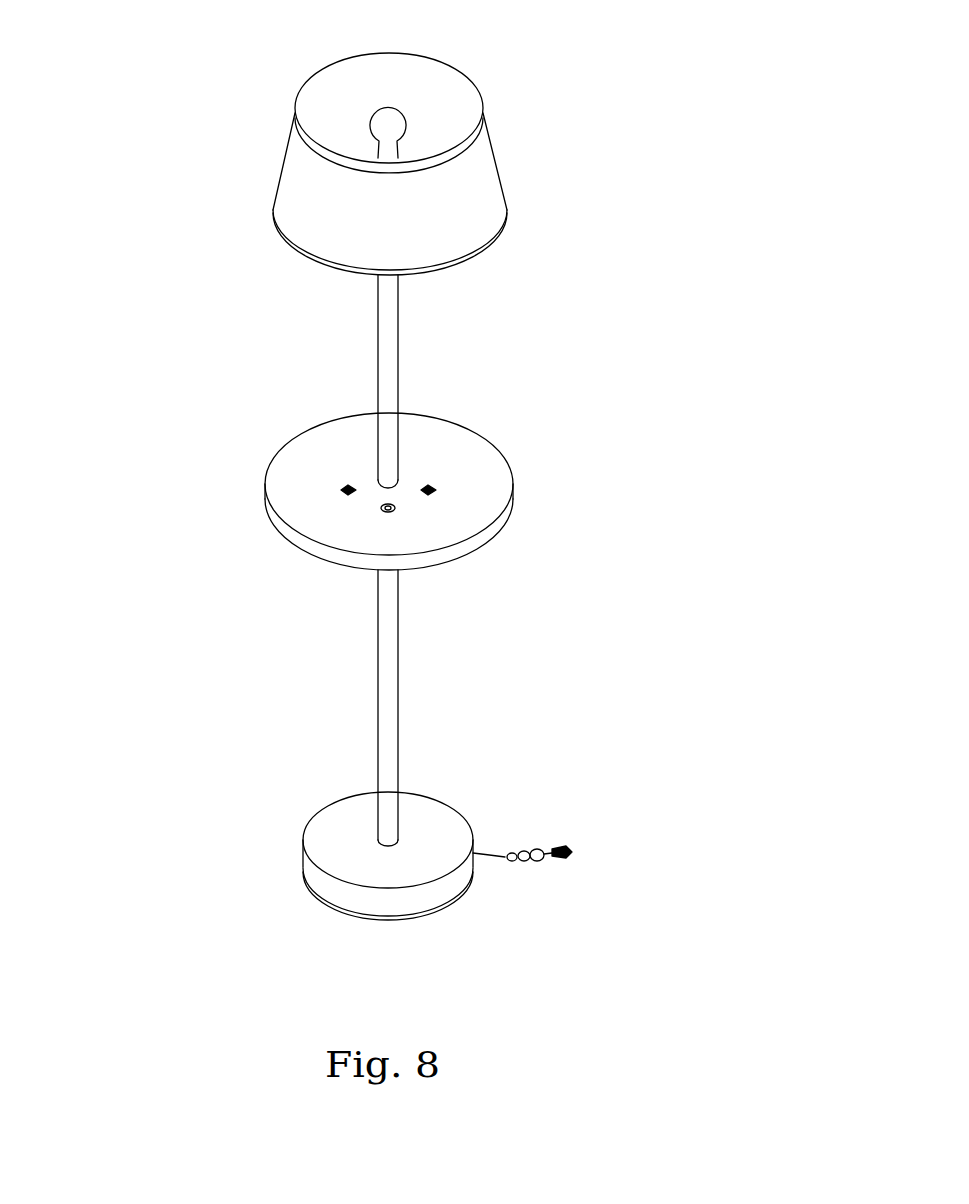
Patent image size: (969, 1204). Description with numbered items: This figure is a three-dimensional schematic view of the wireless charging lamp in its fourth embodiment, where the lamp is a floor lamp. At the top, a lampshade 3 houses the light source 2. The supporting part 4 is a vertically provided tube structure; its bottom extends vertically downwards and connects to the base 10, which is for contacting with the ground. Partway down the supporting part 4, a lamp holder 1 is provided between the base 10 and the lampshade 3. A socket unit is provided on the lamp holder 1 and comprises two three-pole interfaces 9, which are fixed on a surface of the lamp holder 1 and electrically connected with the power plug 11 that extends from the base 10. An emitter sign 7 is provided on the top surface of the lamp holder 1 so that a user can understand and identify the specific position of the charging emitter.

The lamp holder 1 is at (473, 507).
The light source 2 is at (398, 125).
The lampshade 3 is at (478, 190).
The supporting part 4 is at (395, 332).
The emitter sign 7 is at (388, 508).
The three-pole interface 9 is at (348, 490).
The base 10 is at (345, 847).
The power plug 11 is at (528, 855).